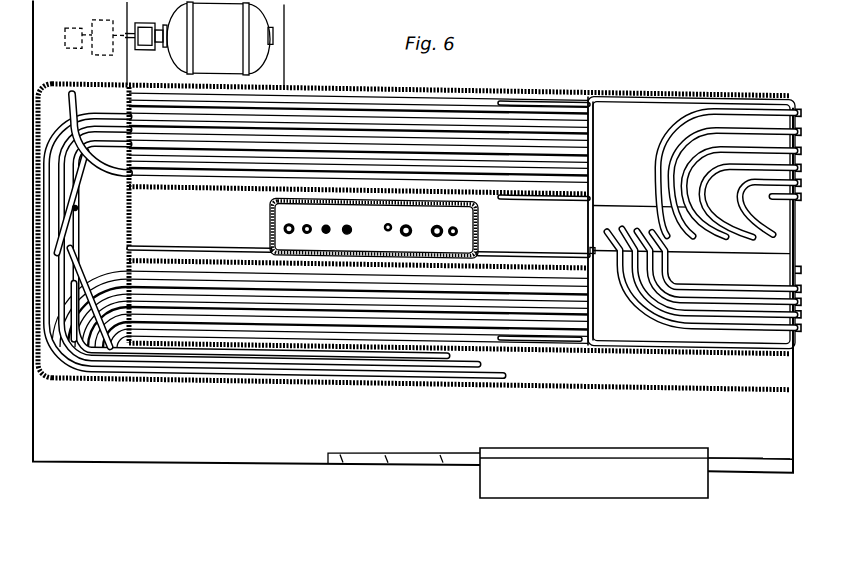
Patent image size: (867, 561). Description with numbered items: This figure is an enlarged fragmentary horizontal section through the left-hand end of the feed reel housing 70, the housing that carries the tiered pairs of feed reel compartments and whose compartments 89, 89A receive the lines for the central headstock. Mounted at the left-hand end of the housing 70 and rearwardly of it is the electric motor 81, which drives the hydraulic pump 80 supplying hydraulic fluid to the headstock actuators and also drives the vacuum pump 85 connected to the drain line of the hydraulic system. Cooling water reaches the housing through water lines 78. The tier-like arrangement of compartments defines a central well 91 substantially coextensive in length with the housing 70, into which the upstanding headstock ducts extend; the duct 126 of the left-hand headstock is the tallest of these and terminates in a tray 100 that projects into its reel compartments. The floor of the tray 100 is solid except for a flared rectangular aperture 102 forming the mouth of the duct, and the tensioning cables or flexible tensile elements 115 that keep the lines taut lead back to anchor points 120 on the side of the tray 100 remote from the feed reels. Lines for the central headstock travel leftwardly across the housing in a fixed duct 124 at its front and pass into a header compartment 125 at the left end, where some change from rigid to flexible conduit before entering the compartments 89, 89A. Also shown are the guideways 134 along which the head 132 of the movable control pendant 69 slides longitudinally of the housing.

The feed reel housing 70 is at (126, 459).
The vacuum pump 85 is at (66, 32).
The hydraulic pump 80 is at (93, 19).
The electric motor 81 is at (257, 20).
The water lines 78 is at (724, 5).
The compartment 89A is at (394, 83).
The fixed duct 124 is at (658, 368).
The compartment 89 is at (487, 334).
The central well 91 is at (132, 229).
The header compartment 125 is at (113, 205).
The flexible tensile elements 115 is at (527, 91).
The duct 126 is at (480, 222).
The tray 100 is at (689, 208).
The anchor points 120 is at (582, 85).
The flared rectangular aperture 102 is at (735, 240).
The pendant 69 is at (559, 491).
The guideways 134 is at (400, 459).
The head 132 is at (510, 482).